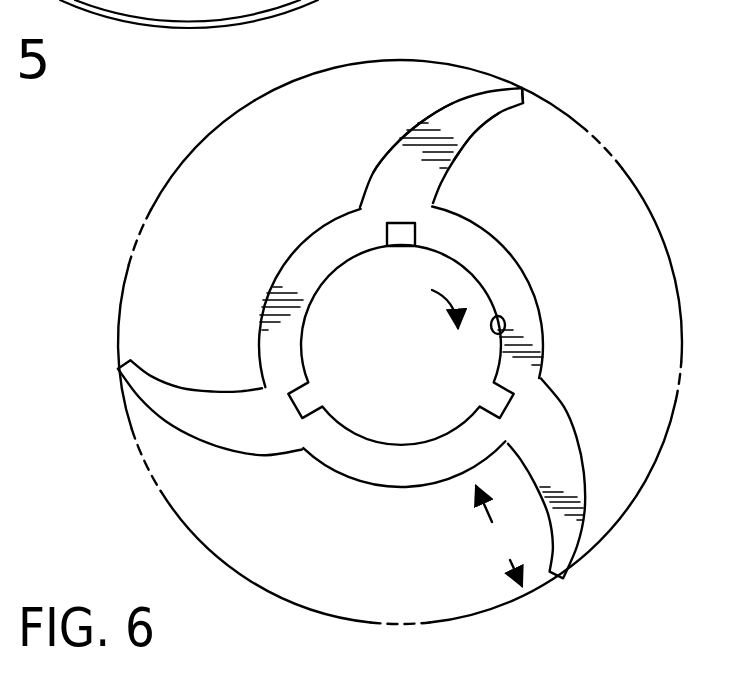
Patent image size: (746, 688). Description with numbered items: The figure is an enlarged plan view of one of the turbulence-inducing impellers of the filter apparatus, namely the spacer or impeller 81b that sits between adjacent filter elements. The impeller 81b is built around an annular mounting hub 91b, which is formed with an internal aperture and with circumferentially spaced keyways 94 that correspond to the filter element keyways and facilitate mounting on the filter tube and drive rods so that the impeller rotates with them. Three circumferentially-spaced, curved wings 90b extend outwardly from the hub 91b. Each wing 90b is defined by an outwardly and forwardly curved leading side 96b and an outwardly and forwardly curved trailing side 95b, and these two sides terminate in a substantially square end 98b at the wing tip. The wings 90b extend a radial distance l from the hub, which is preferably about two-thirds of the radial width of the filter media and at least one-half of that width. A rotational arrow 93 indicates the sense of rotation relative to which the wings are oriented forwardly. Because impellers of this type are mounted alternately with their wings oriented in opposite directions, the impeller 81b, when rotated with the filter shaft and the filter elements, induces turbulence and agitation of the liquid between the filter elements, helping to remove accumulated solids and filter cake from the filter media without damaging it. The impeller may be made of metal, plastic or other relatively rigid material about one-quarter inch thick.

The spacer or impeller 81b is at (286, 229).
The curved wing 90b is at (466, 103).
The annular mounting hub 91b is at (498, 244).
The direction of rotation 93 is at (504, 318).
The keyway 94 is at (390, 232).
The trailing side 95b is at (428, 115).
The leading side 96b is at (478, 120).
The square end 98b is at (526, 86).
The radial distance l is at (495, 560).